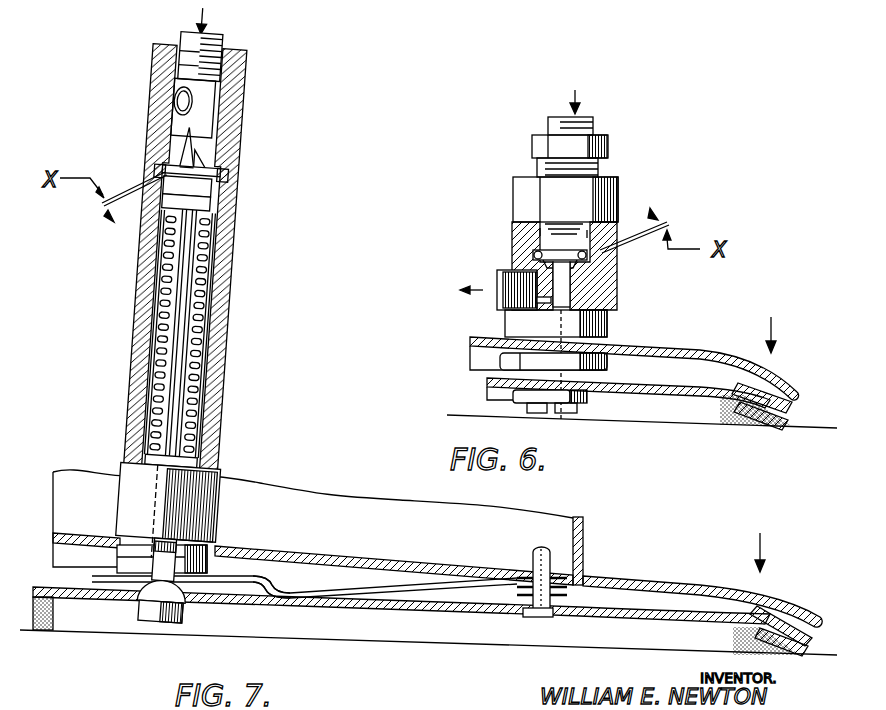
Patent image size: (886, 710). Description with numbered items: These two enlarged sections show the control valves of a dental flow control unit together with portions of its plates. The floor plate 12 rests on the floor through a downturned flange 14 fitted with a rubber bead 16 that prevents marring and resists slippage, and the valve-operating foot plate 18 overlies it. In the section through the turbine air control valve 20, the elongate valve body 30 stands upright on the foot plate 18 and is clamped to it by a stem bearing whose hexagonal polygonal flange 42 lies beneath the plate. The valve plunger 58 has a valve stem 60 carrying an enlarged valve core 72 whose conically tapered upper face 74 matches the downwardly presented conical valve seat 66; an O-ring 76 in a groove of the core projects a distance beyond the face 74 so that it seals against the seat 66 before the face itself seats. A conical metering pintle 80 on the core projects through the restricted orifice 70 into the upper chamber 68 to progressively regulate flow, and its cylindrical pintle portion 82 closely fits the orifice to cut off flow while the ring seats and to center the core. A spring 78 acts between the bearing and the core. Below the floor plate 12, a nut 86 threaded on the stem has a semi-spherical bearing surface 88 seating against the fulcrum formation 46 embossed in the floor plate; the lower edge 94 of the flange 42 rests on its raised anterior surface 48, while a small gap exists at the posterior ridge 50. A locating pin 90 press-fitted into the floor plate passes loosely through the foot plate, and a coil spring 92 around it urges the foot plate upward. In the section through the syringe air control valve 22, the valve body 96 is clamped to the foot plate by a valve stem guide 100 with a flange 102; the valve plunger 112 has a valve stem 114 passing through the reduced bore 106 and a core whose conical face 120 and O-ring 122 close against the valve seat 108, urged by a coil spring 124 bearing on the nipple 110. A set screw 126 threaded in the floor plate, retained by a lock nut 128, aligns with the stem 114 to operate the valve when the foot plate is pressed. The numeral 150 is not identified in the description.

In FIG. 7, the floor plate 12 is at (577, 610).
In FIG. 6, the floor plate 12 is at (713, 388).
In FIG. 7, the floor-engaging flange 14 is at (793, 630).
In FIG. 6, the floor-engaging flange 14 is at (773, 430).
In FIG. 7, the rubber bead 16 is at (770, 610).
In FIG. 6, the rubber bead 16 is at (783, 413).
In FIG. 7, the foot plate 18 is at (620, 580).
In FIG. 6, the foot plate 18 is at (707, 357).
In FIG. 7, the turbine air control valve 20 is at (252, 111).
In FIG. 6, the syringe air control valve 22 is at (508, 185).
In FIG. 7, the valve body 30 is at (247, 62).
In FIG. 7, the polygonal flange 42 is at (195, 573).
In FIG. 7, the fulcrum formation 46 is at (280, 592).
In FIG. 7, the anterior surface 48 is at (237, 555).
In FIG. 7, the posterior ridge 50 is at (92, 573).
In FIG. 7, the valve plunger 58 is at (177, 290).
In FIG. 7, the valve stem 60 is at (167, 392).
In FIG. 7, the conical valve seat 66 is at (160, 170).
In FIG. 7, the upper chamber 68 is at (213, 92).
In FIG. 7, the restricted orifice 70 is at (183, 143).
In FIG. 7, the valve core 72 is at (190, 200).
In FIG. 7, the upper face 74 is at (212, 173).
In FIG. 7, the O-ring 76 is at (205, 181).
In FIG. 7, the spring 78 is at (155, 353).
In FIG. 7, the conical metering pintle 80 is at (197, 133).
In FIG. 7, the cylindrical pintle portion 82 is at (204, 166).
In FIG. 7, the nut 86 is at (145, 615).
In FIG. 7, the semi-spherical bearing surface 88 is at (148, 592).
In FIG. 7, the locating pin 90 is at (533, 550).
In FIG. 7, the coil spring 92 is at (517, 596).
In FIG. 7, the lower edge 94 is at (207, 573).
In FIG. 6, the valve body 96 is at (515, 207).
In FIG. 6, the valve stem guide 100 is at (607, 342).
In FIG. 6, the flange 102 is at (607, 368).
In FIG. 6, the reduced bore 106 is at (612, 307).
In FIG. 6, the valve seat 108 is at (577, 267).
In FIG. 6, the nipple 110 is at (608, 148).
In FIG. 6, the valve plunger 112 is at (517, 307).
In FIG. 6, the valve stem 114 is at (543, 300).
In FIG. 6, the conical face 120 is at (557, 290).
In FIG. 6, the O-ring 122 is at (540, 253).
In FIG. 6, the coil spring 124 is at (563, 227).
In FIG. 6, the set screw 126 is at (553, 410).
In FIG. 6, the lock nut 128 is at (517, 395).
In FIG. 7, the ring 150 is at (178, 92).